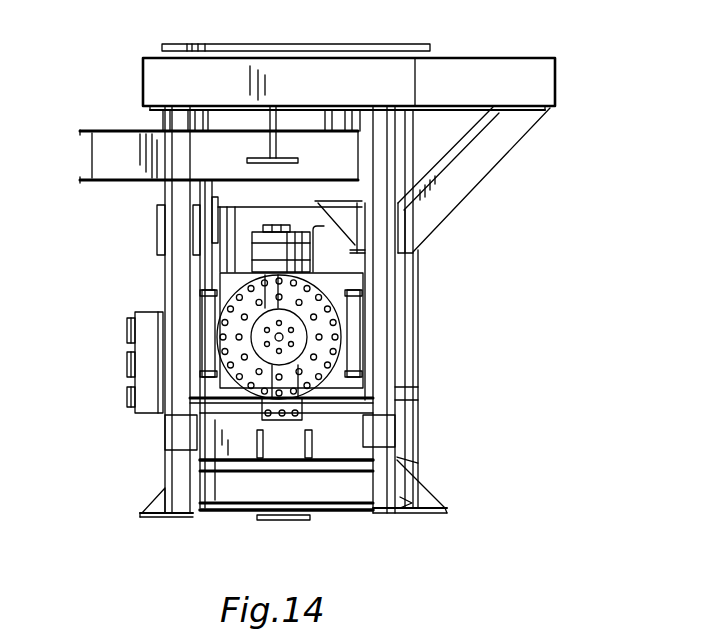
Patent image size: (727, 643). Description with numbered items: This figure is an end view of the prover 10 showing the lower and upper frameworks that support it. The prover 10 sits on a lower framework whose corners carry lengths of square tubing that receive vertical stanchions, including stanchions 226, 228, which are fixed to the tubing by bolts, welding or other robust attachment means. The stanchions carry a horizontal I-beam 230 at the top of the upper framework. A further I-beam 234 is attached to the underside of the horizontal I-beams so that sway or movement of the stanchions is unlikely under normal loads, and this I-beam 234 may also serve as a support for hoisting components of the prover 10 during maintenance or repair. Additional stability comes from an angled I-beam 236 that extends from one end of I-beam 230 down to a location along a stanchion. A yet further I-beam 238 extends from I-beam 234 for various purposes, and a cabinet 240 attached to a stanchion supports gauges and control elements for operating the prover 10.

The prover 10 is at (362, 344).
The vertical stanchion 226 is at (395, 302).
The vertical stanchion 228 is at (165, 273).
The horizontal I-beam 230 is at (557, 80).
The I-beam 234 is at (267, 125).
The angled I-beam 236 is at (473, 182).
The I-beam 238 is at (110, 186).
The cabinet 240 is at (147, 414).